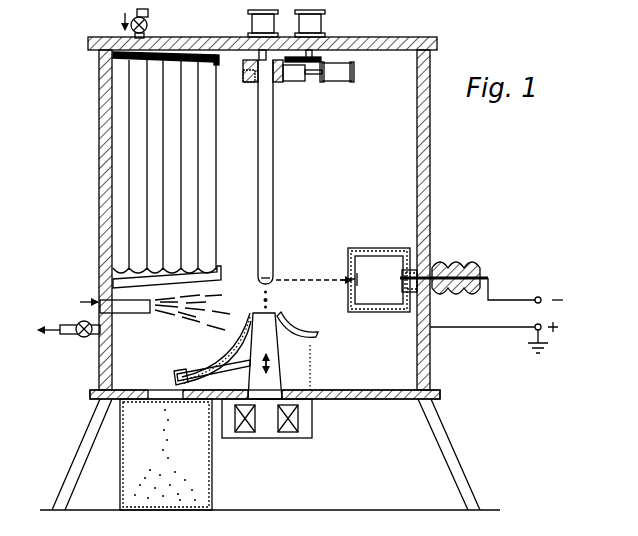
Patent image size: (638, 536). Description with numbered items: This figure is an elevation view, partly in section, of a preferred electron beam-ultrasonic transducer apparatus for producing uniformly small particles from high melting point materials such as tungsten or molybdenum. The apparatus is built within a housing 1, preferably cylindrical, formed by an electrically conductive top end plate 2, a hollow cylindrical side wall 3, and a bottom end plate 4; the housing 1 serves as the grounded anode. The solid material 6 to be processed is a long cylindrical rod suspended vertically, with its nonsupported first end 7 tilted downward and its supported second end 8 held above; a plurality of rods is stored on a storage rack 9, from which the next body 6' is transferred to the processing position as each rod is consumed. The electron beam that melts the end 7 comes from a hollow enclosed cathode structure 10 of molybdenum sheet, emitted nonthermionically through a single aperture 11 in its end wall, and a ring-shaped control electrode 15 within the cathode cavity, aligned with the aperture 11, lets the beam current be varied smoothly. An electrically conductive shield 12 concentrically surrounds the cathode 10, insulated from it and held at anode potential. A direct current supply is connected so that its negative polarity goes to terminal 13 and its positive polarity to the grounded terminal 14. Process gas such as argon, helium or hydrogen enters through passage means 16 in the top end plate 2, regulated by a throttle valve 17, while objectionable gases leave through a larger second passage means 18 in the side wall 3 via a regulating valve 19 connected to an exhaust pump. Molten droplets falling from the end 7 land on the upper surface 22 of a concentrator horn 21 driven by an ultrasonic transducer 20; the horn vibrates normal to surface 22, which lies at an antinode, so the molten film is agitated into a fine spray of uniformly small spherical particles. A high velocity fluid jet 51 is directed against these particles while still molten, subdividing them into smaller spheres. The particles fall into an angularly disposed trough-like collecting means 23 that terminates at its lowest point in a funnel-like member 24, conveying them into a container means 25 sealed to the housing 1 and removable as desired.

The housing 1 is at (431, 150).
The top end plate 2 is at (421, 37).
The hollow cylindrical side wall 3 is at (99, 158).
The bottom end plate 4 is at (440, 393).
The solid material 6 is at (278, 172).
The next body 6' is at (178, 162).
The first end 7 is at (268, 272).
The second end 8 is at (275, 80).
The storage rack 9 is at (173, 280).
The hollow enclosed cathode structure 10 is at (352, 266).
The aperture 11 is at (352, 281).
The electrically conductive shield 12 is at (363, 249).
The terminal 13 is at (541, 297).
The grounded terminal 14 is at (542, 331).
The control electrode 15 is at (358, 279).
The passage means 16 is at (149, 13).
The throttle valve 17 is at (147, 28).
The second passage means 18 is at (70, 336).
The regulating valve 19 is at (77, 322).
The ultrasonic transducer 20 is at (312, 420).
The concentrator horn 21 is at (270, 330).
The upper surface 22 is at (258, 312).
The collecting means 23 is at (318, 340).
The funnel-like member 24 is at (176, 376).
The container means 25 is at (212, 475).
The fluid jet 51 is at (138, 314).